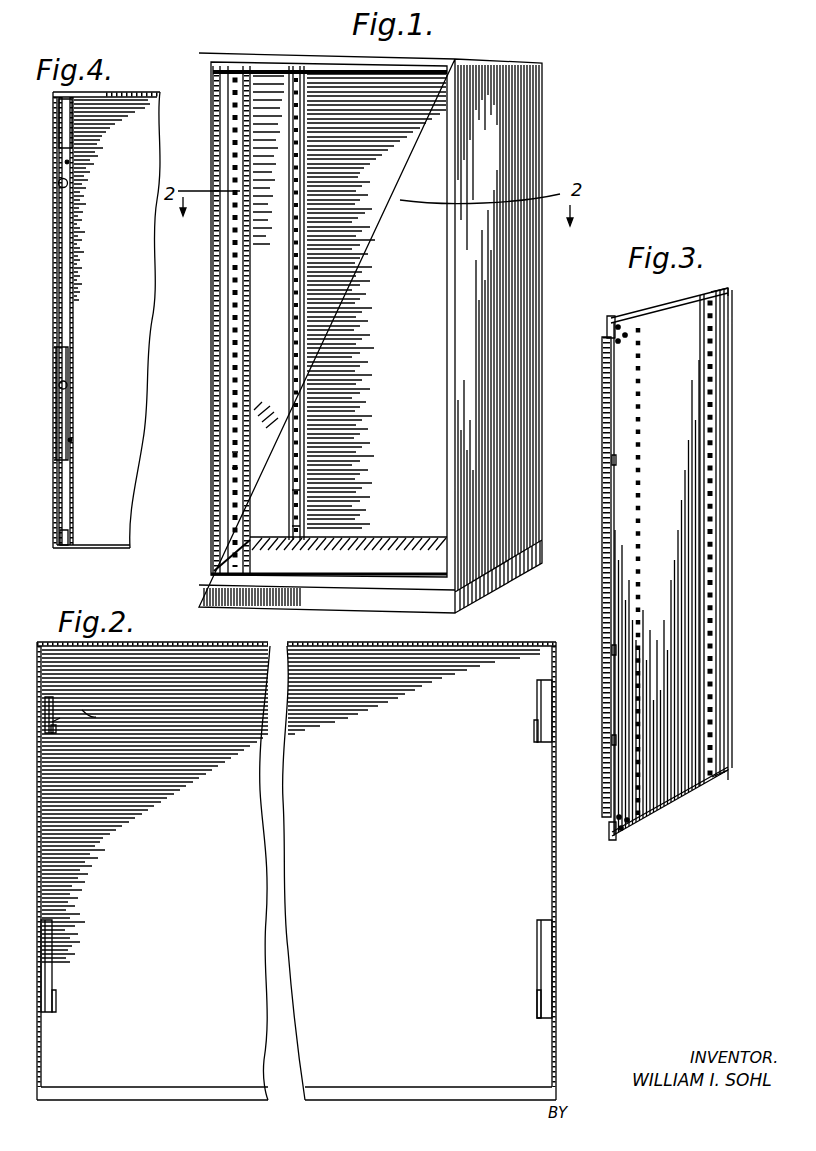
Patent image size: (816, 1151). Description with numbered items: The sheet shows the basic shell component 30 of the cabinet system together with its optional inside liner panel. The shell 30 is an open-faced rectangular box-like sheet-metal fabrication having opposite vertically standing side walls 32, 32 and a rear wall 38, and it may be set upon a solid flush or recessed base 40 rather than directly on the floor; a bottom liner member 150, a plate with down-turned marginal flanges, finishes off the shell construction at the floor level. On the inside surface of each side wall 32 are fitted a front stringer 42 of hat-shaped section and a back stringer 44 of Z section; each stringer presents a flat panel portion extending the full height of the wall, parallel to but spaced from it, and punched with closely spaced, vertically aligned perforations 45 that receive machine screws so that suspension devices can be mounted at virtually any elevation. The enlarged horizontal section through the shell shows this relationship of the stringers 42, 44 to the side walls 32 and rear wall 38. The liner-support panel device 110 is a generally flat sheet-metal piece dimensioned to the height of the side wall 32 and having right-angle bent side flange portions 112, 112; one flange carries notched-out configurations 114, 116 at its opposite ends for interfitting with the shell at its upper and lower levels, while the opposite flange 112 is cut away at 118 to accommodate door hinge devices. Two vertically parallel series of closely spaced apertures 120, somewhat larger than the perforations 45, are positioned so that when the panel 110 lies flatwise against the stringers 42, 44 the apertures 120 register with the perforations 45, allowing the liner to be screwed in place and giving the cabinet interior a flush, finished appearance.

In FIG. 1, the shell component 30 is at (554, 108).
In FIG. 4, the shell component 30 is at (138, 84).
In FIG. 2, the shell component 30 is at (564, 910).
In FIG. 1, the side wall 32 is at (277, 295).
In FIG. 4, the side wall 32 is at (53, 255).
In FIG. 2, the side wall 32 is at (38, 855).
In FIG. 1, the rear wall 38 is at (408, 305).
In FIG. 4, the rear wall 38 is at (110, 97).
In FIG. 2, the rear wall 38 is at (284, 648).
In FIG. 1, the base 40 is at (495, 580).
In FIG. 2, the base 40 is at (54, 720).
In FIG. 1, the front stringer 42 is at (238, 421).
In FIG. 4, the front stringer 42 is at (66, 385).
In FIG. 2, the front stringer 42 is at (53, 942).
In FIG. 1, the back stringer 44 is at (293, 373).
In FIG. 4, the back stringer 44 is at (67, 184).
In FIG. 2, the back stringer 44 is at (44, 736).
In FIG. 1, the perforations 45 is at (237, 470).
In FIG. 2, the perforations 45 is at (50, 1005).
In FIG. 4, the liner-support panel device 110 is at (78, 292).
In FIG. 3, the liner-support panel device 110 is at (703, 597).
In FIG. 3, the side flange portion 112 is at (603, 519).
In FIG. 3, the notched-out configuration 114 is at (732, 773).
In FIG. 3, the notched-out configuration 116 is at (732, 302).
In FIG. 3, the cut-away portion 118 is at (606, 328).
In FIG. 1, the apertures 120 is at (265, 323).
In FIG. 4, the apertures 120 is at (70, 158).
In FIG. 3, the apertures 120 is at (708, 333).
In FIG. 1, the bottom liner member 150 is at (386, 572).